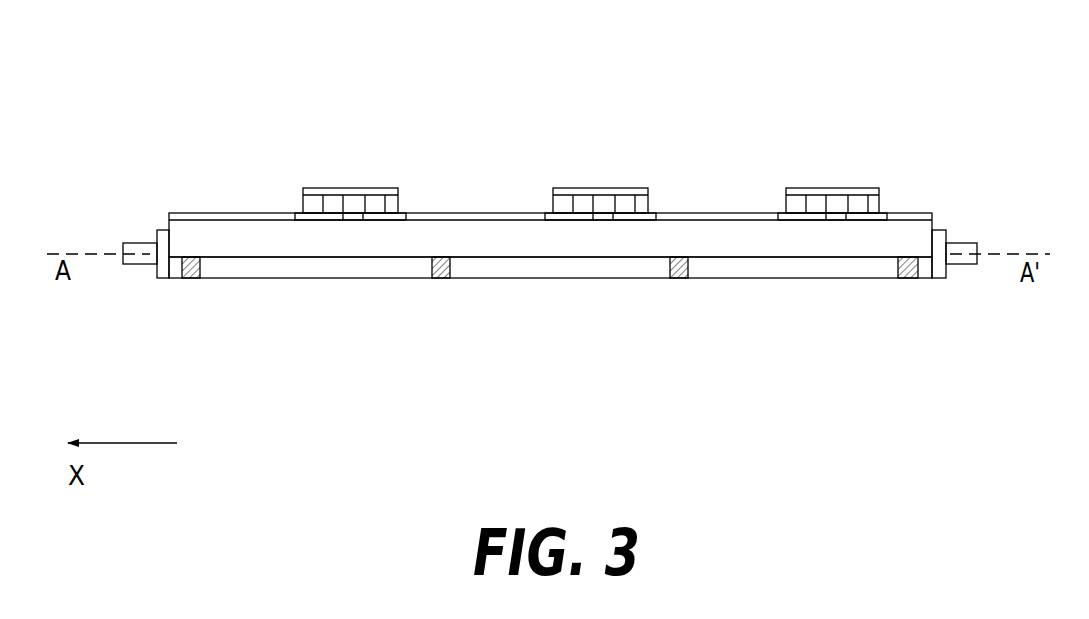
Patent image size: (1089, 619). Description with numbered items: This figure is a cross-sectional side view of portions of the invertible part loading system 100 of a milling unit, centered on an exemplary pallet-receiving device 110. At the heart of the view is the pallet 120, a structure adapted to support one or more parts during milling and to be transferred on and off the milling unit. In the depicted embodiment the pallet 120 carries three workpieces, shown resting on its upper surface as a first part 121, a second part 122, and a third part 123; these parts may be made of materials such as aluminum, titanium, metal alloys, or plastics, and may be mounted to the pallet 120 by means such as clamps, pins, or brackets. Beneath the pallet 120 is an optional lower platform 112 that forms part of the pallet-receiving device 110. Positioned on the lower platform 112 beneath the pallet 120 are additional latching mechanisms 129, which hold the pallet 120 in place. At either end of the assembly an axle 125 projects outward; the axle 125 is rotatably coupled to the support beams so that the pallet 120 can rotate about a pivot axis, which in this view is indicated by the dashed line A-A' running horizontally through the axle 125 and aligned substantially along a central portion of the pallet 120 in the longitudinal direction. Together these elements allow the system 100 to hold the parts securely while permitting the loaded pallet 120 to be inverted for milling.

The invertible part loading system 100 is at (220, 58).
The pallet-receiving device 110 is at (938, 230).
The lower platform 112 is at (810, 278).
The pallet 120 is at (212, 232).
The first part 121 is at (832, 202).
The second part 122 is at (604, 201).
The third part 123 is at (354, 202).
The axle 125 is at (123, 248).
The latching mechanisms 129 is at (680, 278).